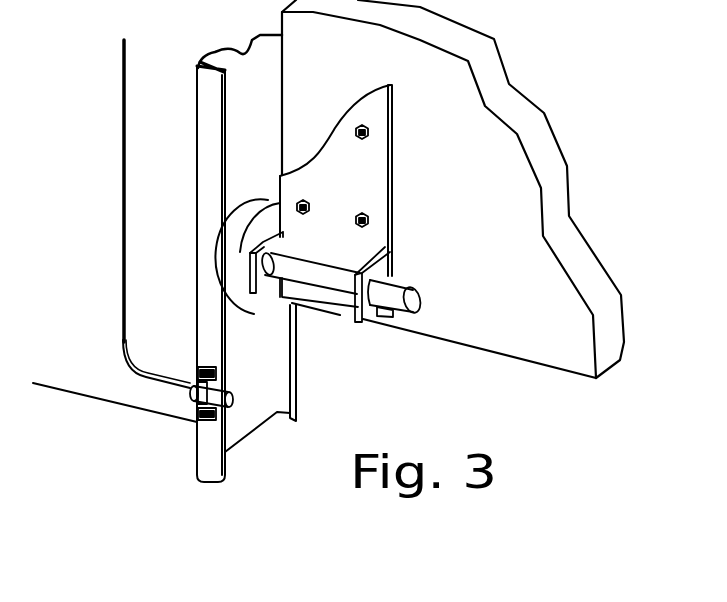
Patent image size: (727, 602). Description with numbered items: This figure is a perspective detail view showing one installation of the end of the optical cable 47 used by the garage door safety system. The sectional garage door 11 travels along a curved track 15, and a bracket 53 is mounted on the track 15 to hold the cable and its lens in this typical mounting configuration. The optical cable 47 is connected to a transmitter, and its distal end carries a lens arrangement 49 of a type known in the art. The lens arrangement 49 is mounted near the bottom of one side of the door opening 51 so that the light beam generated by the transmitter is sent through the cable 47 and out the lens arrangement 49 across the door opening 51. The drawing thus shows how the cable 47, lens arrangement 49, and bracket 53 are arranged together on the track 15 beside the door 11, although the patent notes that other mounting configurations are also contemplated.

The sectional garage door 11 is at (471, 228).
The curved track 15 is at (197, 105).
The optical cable 47 is at (122, 188).
The lens arrangement 49 is at (230, 408).
The door opening 51 is at (312, 400).
The bracket 53 is at (198, 411).